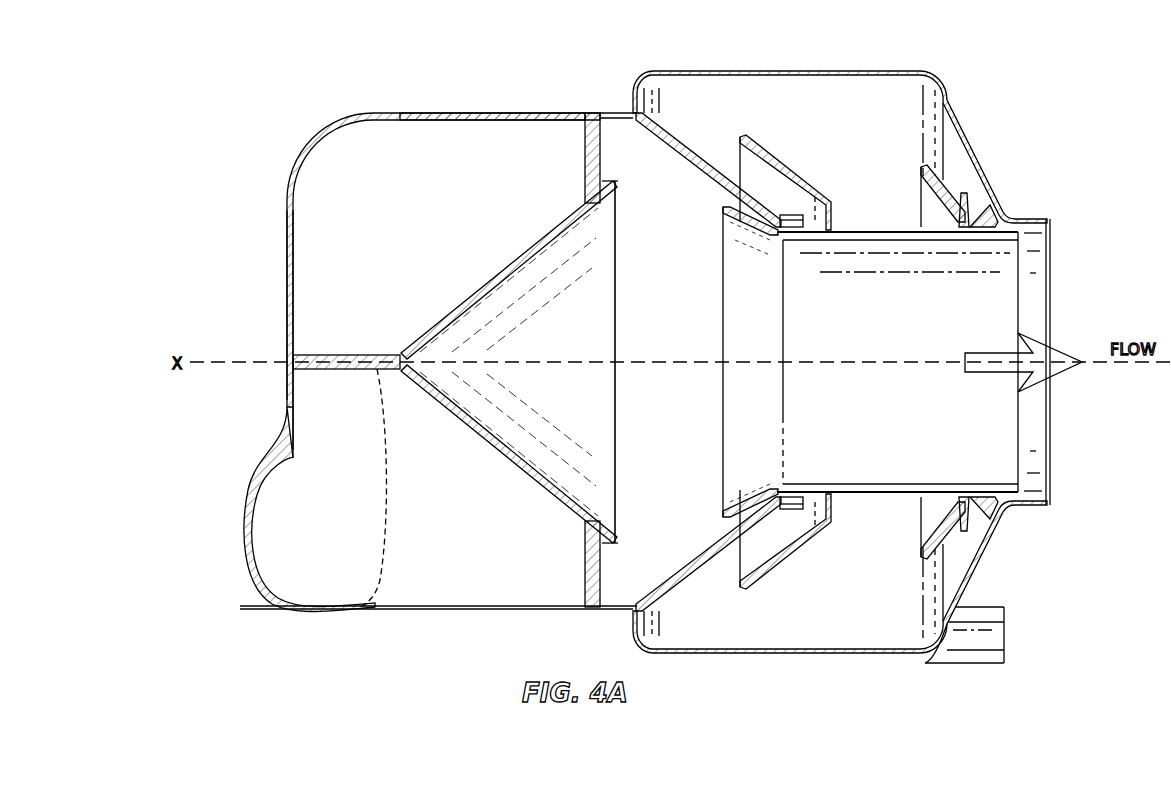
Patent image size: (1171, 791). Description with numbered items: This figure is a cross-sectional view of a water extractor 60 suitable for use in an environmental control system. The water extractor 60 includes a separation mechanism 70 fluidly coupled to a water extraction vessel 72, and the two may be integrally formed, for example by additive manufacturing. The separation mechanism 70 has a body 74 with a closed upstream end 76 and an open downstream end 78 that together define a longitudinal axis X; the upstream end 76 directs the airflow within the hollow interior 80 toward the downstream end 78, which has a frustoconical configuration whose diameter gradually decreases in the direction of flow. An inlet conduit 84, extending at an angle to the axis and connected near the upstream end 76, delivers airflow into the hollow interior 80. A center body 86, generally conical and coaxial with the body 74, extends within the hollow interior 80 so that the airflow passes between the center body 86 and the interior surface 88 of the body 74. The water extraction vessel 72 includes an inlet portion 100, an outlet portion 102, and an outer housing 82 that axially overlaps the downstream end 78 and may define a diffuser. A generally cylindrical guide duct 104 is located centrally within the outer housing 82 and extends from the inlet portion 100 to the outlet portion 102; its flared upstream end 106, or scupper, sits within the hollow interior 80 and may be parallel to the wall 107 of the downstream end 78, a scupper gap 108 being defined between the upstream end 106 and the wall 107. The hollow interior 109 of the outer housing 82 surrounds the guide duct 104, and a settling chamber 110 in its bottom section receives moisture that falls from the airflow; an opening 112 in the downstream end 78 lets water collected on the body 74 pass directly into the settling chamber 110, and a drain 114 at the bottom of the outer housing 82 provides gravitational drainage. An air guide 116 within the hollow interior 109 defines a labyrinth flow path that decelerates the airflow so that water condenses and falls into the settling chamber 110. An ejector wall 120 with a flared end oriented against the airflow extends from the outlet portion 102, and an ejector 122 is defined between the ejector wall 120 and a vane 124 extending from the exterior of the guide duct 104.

The water extractor 60 is at (185, 100).
The separation mechanism 70 is at (503, 112).
The water extraction vessel 72 is at (770, 68).
The body 74 is at (437, 113).
The upstream end 76 is at (285, 305).
The downstream end 78 is at (738, 563).
The hollow interior 80 is at (478, 194).
The outer housing 82 is at (680, 72).
The inlet conduit 84 is at (290, 537).
The center body 86 is at (465, 303).
The interior surface 88 is at (497, 597).
The inlet portion 100 is at (693, 197).
The outlet portion 102 is at (1015, 520).
The guide duct 104 is at (885, 230).
The upstream end of the guide duct 106 is at (713, 528).
The wall 107 is at (708, 160).
The scupper gap 108 is at (737, 232).
The hollow interior of the outer housing 109 is at (811, 112).
The settling chamber 110 is at (893, 586).
The opening 112 is at (655, 610).
The drain 114 is at (997, 630).
The air guide 116 is at (750, 135).
The ejector wall 120 is at (980, 208).
The ejector 122 is at (987, 210).
The vane 124 is at (945, 215).